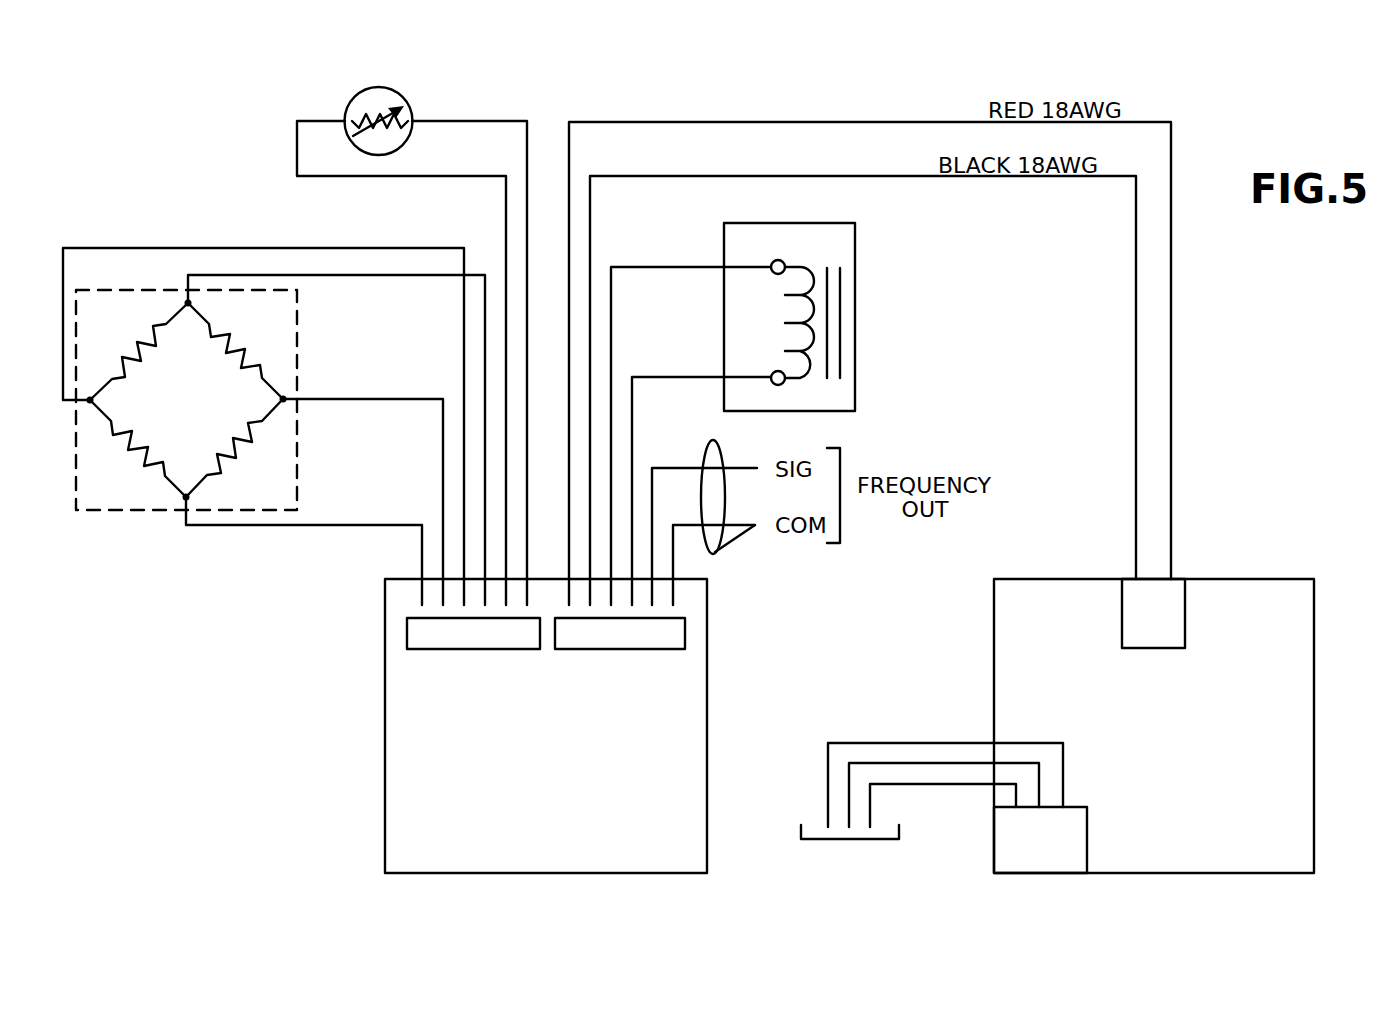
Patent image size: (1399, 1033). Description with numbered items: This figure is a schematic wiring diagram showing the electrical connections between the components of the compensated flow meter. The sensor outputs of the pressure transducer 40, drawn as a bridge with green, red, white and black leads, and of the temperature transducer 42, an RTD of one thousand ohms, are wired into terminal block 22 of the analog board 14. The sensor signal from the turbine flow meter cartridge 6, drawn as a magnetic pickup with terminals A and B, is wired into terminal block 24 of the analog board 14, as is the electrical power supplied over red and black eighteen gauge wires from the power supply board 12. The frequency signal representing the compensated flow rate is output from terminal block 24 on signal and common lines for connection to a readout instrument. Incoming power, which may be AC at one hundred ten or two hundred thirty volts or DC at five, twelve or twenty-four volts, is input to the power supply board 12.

The temperature transducer 42 is at (355, 90).
The pressure transducer 40 is at (260, 513).
The turbine flow meter cartridge 6 is at (855, 240).
The terminal block 22 is at (406, 634).
The terminal block 24 is at (686, 638).
The analog board 14 is at (535, 726).
The power supply board 12 is at (1314, 662).